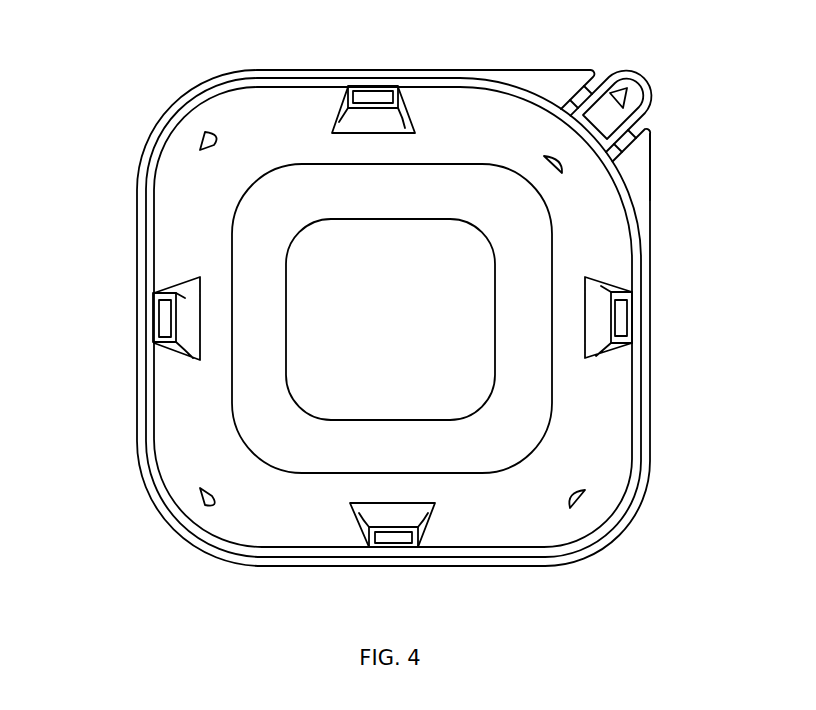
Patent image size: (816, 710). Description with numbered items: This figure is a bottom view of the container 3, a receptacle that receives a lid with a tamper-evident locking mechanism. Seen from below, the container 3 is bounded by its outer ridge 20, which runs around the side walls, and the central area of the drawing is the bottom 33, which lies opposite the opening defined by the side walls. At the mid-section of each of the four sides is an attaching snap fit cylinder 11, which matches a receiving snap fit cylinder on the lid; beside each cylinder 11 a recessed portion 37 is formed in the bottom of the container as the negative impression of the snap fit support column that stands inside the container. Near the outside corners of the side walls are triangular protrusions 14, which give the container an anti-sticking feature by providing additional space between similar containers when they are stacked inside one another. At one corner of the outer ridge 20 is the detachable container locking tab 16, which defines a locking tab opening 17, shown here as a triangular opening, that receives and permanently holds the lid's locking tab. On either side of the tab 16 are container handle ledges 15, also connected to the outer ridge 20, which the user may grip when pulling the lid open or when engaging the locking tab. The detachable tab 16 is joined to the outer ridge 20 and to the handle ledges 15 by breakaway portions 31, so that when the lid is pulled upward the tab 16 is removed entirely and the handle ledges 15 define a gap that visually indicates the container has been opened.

The container 3 is at (641, 257).
The attaching snap fit cylinder 11 is at (357, 96).
The triangular protrusion 14 is at (200, 134).
The container handle ledge 15 is at (637, 154).
The detachable container locking tab 16 is at (630, 72).
The locking tab opening 17 is at (624, 96).
The outer ridge of the container 20 is at (575, 543).
The breakaway portion 31 is at (588, 70).
The bottom 33 is at (366, 330).
The recessed portion 37 is at (405, 126).